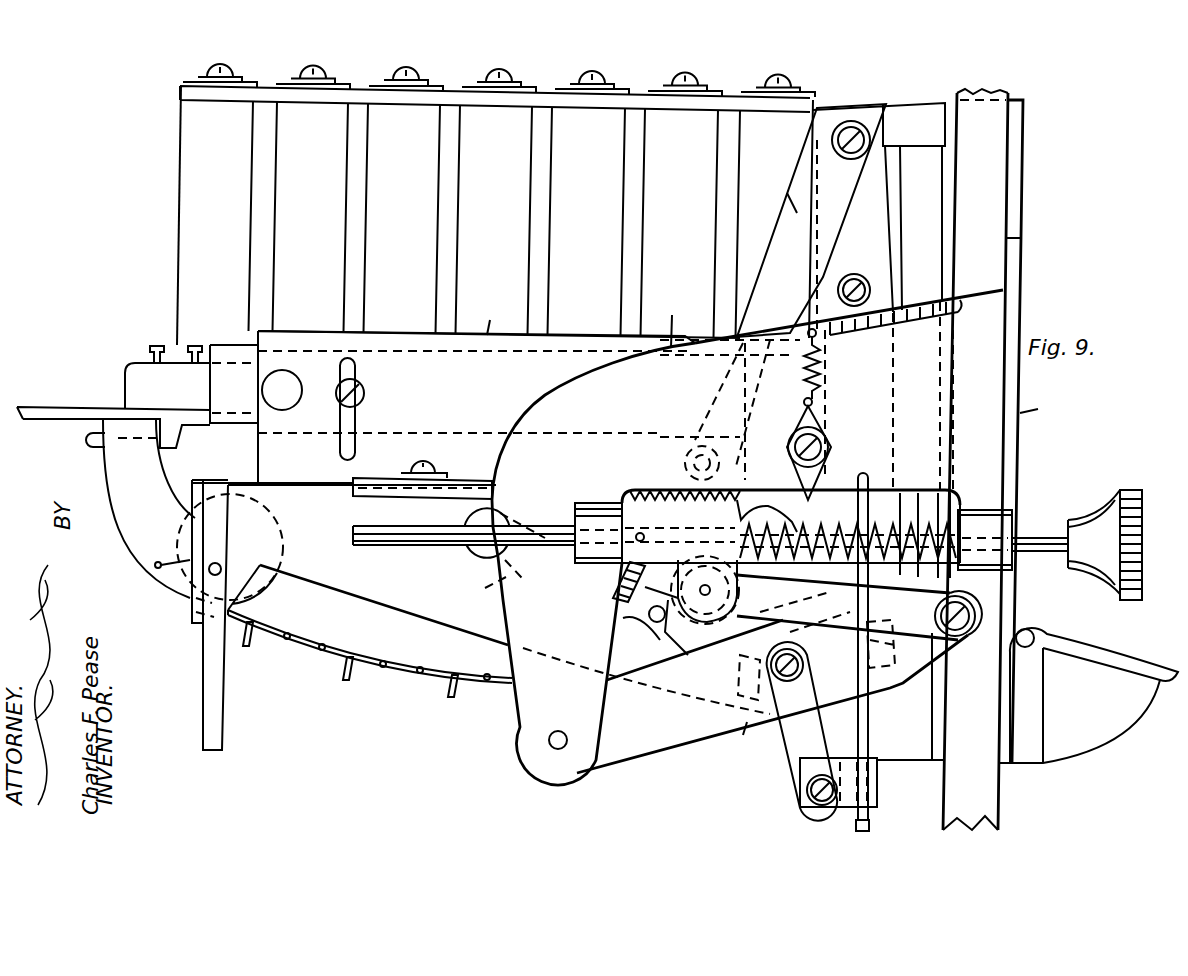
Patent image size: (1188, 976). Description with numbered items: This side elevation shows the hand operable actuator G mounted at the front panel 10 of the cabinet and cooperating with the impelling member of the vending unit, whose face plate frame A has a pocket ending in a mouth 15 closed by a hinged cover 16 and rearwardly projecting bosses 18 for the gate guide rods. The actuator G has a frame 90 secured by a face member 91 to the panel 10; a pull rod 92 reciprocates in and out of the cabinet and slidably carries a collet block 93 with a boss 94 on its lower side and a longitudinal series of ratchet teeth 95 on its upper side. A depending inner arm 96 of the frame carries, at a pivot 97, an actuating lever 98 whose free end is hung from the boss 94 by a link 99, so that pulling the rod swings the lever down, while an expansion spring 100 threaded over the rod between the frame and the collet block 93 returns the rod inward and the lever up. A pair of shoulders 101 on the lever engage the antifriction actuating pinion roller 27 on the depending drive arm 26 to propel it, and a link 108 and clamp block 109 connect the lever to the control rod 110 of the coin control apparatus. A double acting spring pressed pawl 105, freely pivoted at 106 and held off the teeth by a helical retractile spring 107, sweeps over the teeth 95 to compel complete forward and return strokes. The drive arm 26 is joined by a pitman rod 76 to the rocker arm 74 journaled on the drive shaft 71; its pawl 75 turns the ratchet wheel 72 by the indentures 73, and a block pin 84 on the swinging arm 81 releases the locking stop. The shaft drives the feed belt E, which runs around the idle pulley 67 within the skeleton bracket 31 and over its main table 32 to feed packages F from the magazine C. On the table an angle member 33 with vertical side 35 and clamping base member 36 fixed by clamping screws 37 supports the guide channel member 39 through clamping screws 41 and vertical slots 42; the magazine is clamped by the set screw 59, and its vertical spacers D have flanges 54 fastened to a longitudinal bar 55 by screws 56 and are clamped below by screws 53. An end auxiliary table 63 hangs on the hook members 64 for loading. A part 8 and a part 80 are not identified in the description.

The screw 56 is at (212, 79).
The flange 54 is at (180, 88).
The longitudinal bar 55 is at (180, 98).
The screws 53 is at (198, 340).
The end auxiliary table 63 is at (49, 404).
The hook members 64 is at (90, 447).
The guide channel member 39 is at (236, 421).
The set screw 59 is at (282, 411).
The clamping screws 41 is at (368, 392).
The vertical slots 42 is at (354, 418).
The angle member 33 is at (443, 408).
The vertical sides 35 is at (495, 313).
The frame 90 is at (990, 477).
The pitman rod 76 is at (775, 191).
The drive arm 26 is at (842, 226).
The bosses 18 is at (879, 207).
The front panel 10 is at (1010, 97).
The face member 91 is at (1043, 404).
The pull rod 92 is at (1034, 536).
The helical retractile spring 107 is at (822, 368).
The double acting spring pressed pawl 105 is at (822, 420).
The pivot 106 is at (828, 446).
The shoulders 101 is at (886, 740).
The expansion spring 100 is at (896, 532).
The ratchet teeth 95 is at (649, 490).
The collet block 93 is at (618, 502).
The clamping screws 37 is at (420, 470).
The clamping base members 36 is at (463, 478).
The rod 8 is at (480, 525).
The main table 32 is at (323, 486).
The idle pulley 67 is at (283, 549).
The skeleton bracket 31 is at (368, 601).
The swinging arm 81 is at (480, 588).
The block pin 84 is at (612, 580).
The inner arm 96 is at (645, 610).
The pin 80 is at (648, 622).
The indentures 73 is at (612, 640).
The boss 94 is at (668, 643).
The ratchet wheel 72 is at (690, 645).
The drive shaft 71 is at (770, 587).
The link 99 is at (943, 613).
The hinged cover 16 is at (1117, 647).
The mouth 15 is at (1079, 705).
The rocker arm 74 is at (772, 674).
The pawl 75 is at (740, 743).
The actuating pinion roller 27 is at (895, 695).
The actuating lever 98 is at (690, 738).
The pivot 97 is at (560, 750).
The link 108 is at (800, 747).
The clamp block 109 is at (846, 810).
The control rod 110 is at (871, 828).
The face plate frame A is at (1023, 198).
The magazine C is at (124, 350).
The vertical spacers D is at (495, 215).
The feed belt E is at (370, 660).
The packages F is at (672, 320).
The manually operable actuator G is at (831, 525).